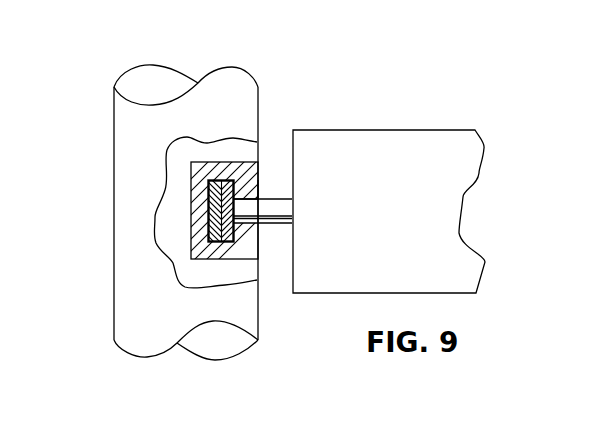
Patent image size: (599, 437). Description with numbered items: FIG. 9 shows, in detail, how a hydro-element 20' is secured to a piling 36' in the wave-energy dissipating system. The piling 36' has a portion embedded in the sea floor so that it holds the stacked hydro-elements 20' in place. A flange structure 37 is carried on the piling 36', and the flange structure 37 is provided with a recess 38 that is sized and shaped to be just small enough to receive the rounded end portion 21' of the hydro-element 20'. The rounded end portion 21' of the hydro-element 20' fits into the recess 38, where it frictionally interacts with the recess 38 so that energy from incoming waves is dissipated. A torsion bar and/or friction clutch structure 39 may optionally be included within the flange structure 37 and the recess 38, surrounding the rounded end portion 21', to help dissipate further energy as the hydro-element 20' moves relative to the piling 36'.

The piling 36' is at (153, 212).
The flange structure 37 is at (198, 190).
The recess 38 is at (250, 188).
The torsion bar and/or friction clutch structure 39 is at (210, 223).
The rounded end portion 21' is at (305, 234).
The hydro-element 20' is at (389, 183).